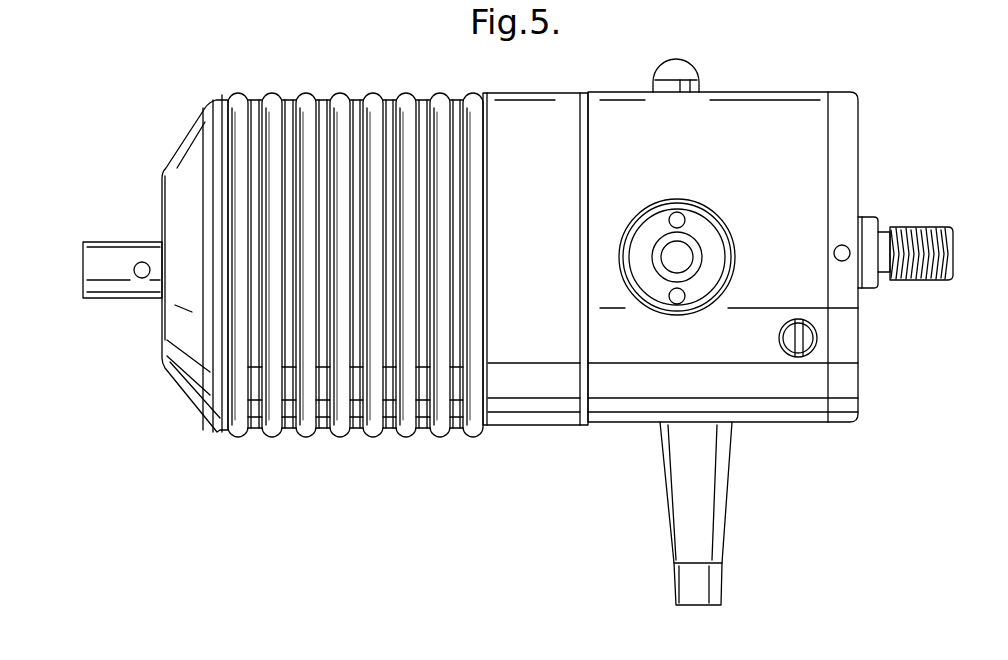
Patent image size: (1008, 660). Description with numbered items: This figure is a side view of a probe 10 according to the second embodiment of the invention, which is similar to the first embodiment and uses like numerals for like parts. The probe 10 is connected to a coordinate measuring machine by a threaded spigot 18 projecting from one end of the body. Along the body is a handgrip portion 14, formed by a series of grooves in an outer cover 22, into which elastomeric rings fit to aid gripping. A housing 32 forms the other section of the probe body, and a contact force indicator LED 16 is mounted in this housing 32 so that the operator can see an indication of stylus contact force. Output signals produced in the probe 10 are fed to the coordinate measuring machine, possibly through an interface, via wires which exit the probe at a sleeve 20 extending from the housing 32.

The probe 10 is at (186, 409).
The handgrip portion 14 is at (483, 80).
The contact force indicator LED 16 is at (680, 68).
The threaded spigot 18 is at (915, 226).
The sleeve 20 is at (716, 508).
The outer cover 22 is at (188, 160).
The housing 32 is at (790, 92).